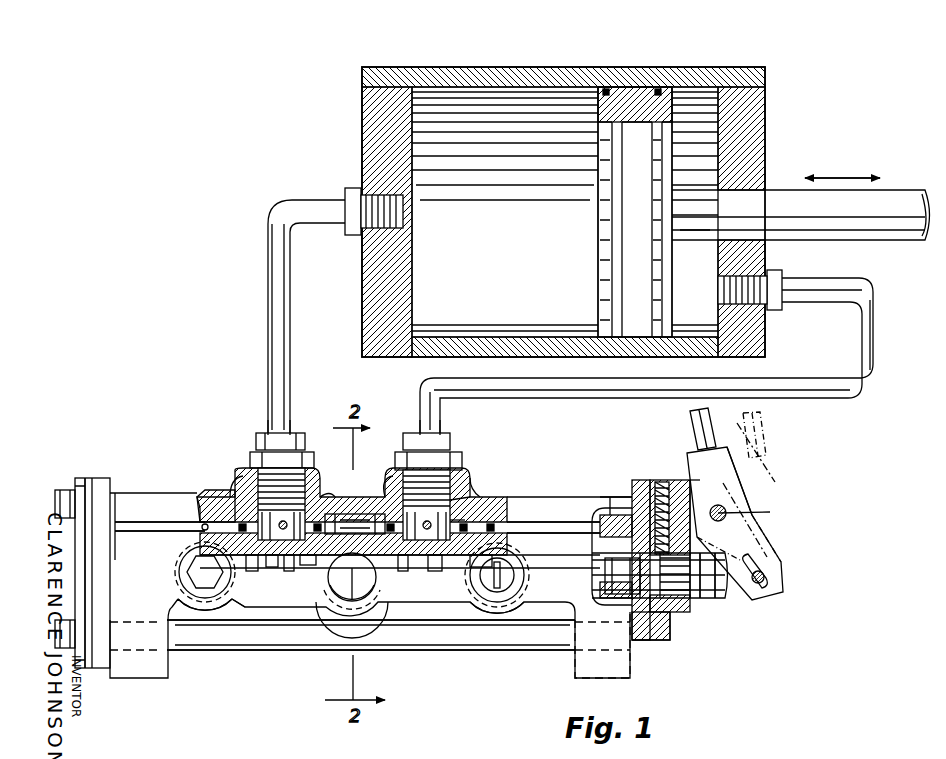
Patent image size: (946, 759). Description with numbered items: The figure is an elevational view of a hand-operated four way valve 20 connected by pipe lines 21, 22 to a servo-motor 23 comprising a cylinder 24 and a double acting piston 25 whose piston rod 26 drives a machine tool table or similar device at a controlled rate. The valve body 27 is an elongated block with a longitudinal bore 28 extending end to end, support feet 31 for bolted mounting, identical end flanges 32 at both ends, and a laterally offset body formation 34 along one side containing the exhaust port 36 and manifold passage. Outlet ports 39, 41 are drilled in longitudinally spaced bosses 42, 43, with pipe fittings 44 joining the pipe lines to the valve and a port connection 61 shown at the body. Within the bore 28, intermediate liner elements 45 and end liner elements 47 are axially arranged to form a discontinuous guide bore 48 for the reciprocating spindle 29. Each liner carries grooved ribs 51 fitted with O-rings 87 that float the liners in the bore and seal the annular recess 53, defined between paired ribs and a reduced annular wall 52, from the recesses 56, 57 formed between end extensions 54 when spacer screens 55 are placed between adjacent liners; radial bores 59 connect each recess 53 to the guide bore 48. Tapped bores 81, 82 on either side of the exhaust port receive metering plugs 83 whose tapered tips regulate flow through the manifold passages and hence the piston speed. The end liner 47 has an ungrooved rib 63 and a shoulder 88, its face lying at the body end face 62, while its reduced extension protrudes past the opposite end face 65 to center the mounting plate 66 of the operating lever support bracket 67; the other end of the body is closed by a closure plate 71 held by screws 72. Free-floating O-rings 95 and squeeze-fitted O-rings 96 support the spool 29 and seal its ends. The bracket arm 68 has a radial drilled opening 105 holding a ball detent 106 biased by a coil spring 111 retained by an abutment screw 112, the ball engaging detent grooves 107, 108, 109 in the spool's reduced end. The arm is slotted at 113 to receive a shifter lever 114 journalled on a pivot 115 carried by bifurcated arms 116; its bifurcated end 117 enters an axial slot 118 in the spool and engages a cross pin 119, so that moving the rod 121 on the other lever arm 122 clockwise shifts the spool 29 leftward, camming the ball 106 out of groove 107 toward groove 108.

The four way valve 20 is at (230, 657).
The pipe line 21 is at (270, 364).
The pipe line 22 is at (535, 398).
The servo-motor 23 is at (514, 62).
The cylinder 24 is at (474, 240).
The double acting piston 25 is at (598, 226).
The piston rod 26 is at (893, 194).
The valve body 27 is at (522, 522).
The bore 28 is at (205, 530).
The spindle 29 is at (600, 575).
The support feet 31 is at (135, 678).
The end flanges 32 is at (100, 478).
The body formation 34 is at (440, 622).
The exhaust port 36 is at (322, 603).
The outlet port 39 is at (258, 485).
The outlet port 41 is at (455, 495).
The boss 42 is at (256, 442).
The boss 43 is at (455, 478).
The nut 44 is at (314, 462).
The intermediate liner element 45 is at (305, 565).
The end liner element 47 is at (592, 530).
The guide bore 48 is at (435, 571).
The annularly enlarged rib 51 is at (240, 523).
The annular wall 52 is at (252, 571).
The annular recess 53 is at (290, 566).
The end extension 54 is at (345, 558).
The spacer screen 55 is at (335, 533).
The annular recess 56 is at (357, 514).
The annular recess 57 is at (200, 500).
The radial bore 59 is at (270, 567).
The port 61 is at (464, 510).
The end face 62 is at (78, 482).
The annular rib 63 is at (610, 515).
The end face 65 is at (655, 485).
The mounting plate 66 is at (640, 640).
The support bracket 67 is at (662, 636).
The bracket arm 68 is at (692, 480).
The closure plate 71 is at (84, 480).
The screw 72 is at (55, 495).
The tapped bore 81 is at (232, 597).
The tapped bore 82 is at (521, 558).
The metering plug 83 is at (205, 576).
The O-ring 87 is at (235, 485).
The shoulder 88 is at (618, 497).
The O-ring 95 is at (400, 572).
The O-ring 96 is at (605, 588).
The drilled opening 105 is at (688, 525).
The ball detent 106 is at (690, 565).
The ball detent groove 107 is at (660, 612).
The ball detent groove 108 is at (692, 598).
The ball detent groove 109 is at (700, 600).
The coil spring 111 is at (672, 532).
The abutment screw 112 is at (660, 482).
The slot 113 is at (688, 485).
The shifter lever 114 is at (755, 508).
The pivot 115 is at (730, 513).
The bifurcated arms 116 is at (775, 462).
The bifurcated end 117 is at (760, 548).
The axial slot 118 is at (742, 588).
The cross pin 119 is at (760, 586).
The rod 121 is at (692, 425).
The arm 122 is at (748, 438).